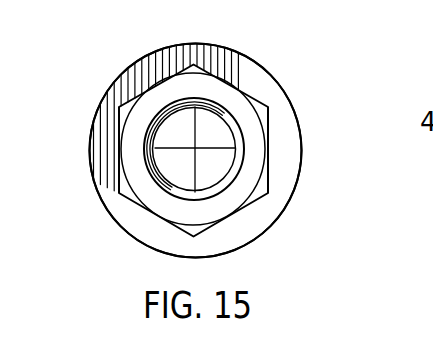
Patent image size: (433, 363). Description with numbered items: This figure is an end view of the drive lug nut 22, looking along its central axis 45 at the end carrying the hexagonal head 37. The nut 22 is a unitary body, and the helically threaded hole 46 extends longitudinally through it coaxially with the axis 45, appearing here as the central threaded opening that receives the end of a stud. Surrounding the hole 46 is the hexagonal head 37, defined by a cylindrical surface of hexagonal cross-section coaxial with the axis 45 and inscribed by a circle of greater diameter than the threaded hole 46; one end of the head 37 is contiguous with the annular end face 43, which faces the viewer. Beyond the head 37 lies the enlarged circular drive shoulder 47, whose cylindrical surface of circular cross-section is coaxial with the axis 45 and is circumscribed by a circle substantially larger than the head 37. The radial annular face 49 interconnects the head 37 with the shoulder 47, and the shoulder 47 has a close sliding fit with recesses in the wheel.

The drive lug nut 22 is at (244, 50).
The radial annular face 49 is at (261, 75).
The circular drive shoulder 47 is at (96, 121).
The hexagonal head 37 is at (268, 121).
The annular end face 43 is at (168, 203).
The helically threaded hole 46 is at (237, 167).
The central axis 45 is at (194, 148).